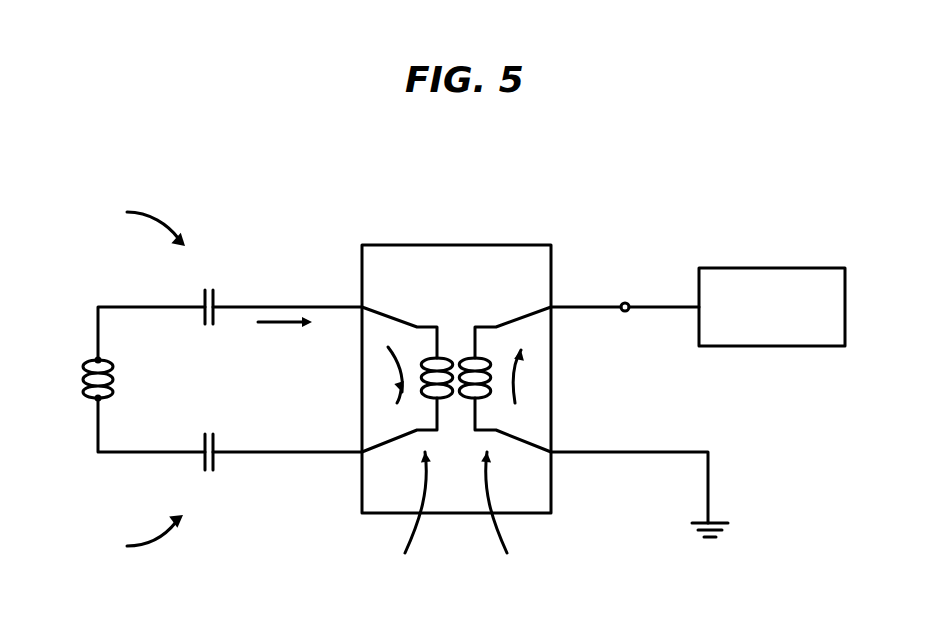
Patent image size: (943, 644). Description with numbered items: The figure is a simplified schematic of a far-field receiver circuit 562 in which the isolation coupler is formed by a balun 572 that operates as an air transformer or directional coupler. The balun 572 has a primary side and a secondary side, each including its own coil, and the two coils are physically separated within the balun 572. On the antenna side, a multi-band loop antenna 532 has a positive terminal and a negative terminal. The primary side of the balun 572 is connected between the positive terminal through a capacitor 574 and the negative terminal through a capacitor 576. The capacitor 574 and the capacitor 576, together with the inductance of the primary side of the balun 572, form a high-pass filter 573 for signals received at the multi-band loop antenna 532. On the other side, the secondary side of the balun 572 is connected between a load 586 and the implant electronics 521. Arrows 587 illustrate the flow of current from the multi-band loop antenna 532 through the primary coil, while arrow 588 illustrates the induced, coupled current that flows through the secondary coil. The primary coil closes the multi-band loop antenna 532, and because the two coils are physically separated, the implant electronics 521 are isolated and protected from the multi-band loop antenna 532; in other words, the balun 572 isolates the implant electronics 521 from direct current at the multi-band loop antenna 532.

The implant electronics 521 is at (770, 268).
The multi-band loop antenna 532 is at (88, 380).
The far-field receiver circuit 562 is at (136, 538).
The balun 572 is at (521, 245).
The high-pass filter 573 is at (137, 222).
The capacitor 574 is at (215, 295).
The capacitor 576 is at (215, 462).
The load 586 is at (719, 533).
The arrows 587 is at (272, 323).
The arrow 588 is at (508, 383).